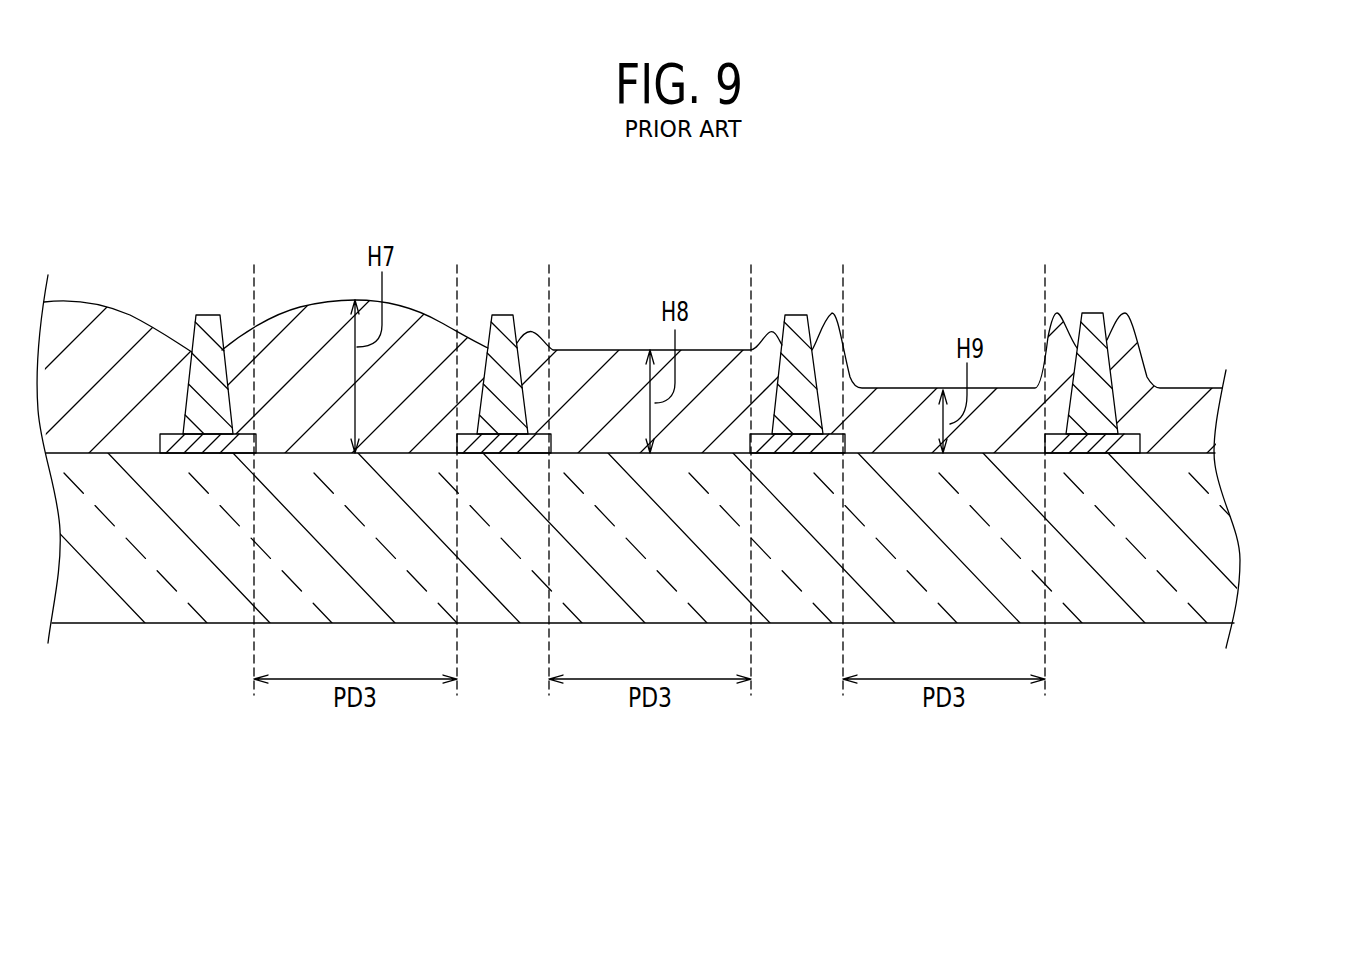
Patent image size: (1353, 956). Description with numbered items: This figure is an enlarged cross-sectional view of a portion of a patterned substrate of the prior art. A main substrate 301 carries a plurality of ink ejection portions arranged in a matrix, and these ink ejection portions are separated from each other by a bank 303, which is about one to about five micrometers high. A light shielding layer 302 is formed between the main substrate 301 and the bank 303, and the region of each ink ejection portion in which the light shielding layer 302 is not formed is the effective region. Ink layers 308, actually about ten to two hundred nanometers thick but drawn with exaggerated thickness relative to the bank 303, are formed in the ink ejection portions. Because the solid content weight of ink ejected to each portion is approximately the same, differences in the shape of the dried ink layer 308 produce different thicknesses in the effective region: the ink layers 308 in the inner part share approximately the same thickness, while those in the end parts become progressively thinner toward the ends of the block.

The main substrate 301 is at (1225, 547).
The light shielding layer 302 is at (1143, 441).
The bank 303 is at (1094, 313).
The ink layer 308 is at (1195, 387).